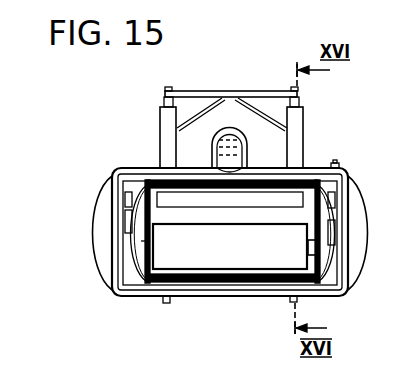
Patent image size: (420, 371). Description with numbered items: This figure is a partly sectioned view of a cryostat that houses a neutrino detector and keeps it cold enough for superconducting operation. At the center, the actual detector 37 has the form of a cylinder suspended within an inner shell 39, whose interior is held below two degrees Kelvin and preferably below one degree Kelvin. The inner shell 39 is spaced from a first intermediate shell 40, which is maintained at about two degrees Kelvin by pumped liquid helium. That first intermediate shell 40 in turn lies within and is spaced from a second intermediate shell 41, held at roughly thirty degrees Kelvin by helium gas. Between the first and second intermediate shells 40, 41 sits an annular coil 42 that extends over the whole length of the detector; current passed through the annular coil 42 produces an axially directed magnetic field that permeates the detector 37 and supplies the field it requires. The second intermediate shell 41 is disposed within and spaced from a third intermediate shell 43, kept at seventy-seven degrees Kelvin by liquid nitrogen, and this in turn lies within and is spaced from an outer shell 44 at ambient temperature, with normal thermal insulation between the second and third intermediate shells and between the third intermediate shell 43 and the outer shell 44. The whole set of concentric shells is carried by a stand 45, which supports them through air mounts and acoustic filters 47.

The detector 37 is at (205, 225).
The inner shell 39 is at (147, 241).
The first intermediate shell 40 is at (150, 270).
The second intermediate shell 41 is at (140, 291).
The annular coil 42 is at (322, 281).
The third intermediate shell 43 is at (210, 291).
The outer shell 44 is at (96, 200).
The stand 45 is at (212, 91).
The acoustic filters 47 is at (303, 137).